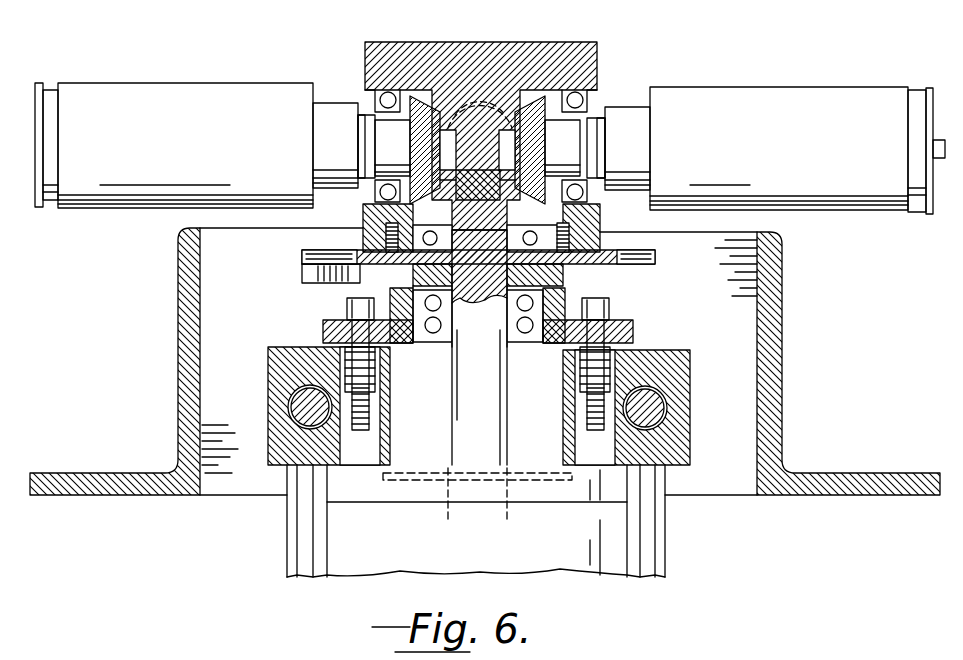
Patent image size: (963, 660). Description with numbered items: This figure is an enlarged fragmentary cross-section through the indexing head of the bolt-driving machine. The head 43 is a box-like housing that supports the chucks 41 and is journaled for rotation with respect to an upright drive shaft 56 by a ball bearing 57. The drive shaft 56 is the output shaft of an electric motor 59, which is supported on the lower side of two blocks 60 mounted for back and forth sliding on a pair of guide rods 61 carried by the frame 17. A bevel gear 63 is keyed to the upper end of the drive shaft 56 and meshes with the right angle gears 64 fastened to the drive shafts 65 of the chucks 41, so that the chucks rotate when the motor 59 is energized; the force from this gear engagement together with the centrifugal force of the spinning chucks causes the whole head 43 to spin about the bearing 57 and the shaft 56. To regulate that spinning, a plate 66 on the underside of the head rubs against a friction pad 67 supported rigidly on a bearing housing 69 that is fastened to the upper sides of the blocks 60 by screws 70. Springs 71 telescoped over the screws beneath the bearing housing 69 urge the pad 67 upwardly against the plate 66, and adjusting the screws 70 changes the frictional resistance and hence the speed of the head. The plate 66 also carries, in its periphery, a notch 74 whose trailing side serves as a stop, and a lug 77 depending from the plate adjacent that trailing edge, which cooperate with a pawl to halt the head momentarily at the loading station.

The frame 17 is at (178, 330).
The chuck 41 is at (105, 85).
The head 43 is at (590, 44).
The drive shaft 56 is at (465, 411).
The ball bearing 57 is at (596, 216).
The electric motor 59 is at (287, 550).
The block 60 is at (292, 350).
The guide rod 61 is at (296, 410).
The bevel gear 63 is at (570, 152).
The right angle gear 64 is at (440, 98).
The chuck drive shaft 65 is at (366, 130).
The plate 66 is at (624, 256).
The friction pad 67 is at (565, 276).
The bearing housing 69 is at (636, 335).
The screw 70 is at (380, 358).
The spring 71 is at (385, 386).
The notch 74 is at (305, 255).
The lug 77 is at (306, 278).